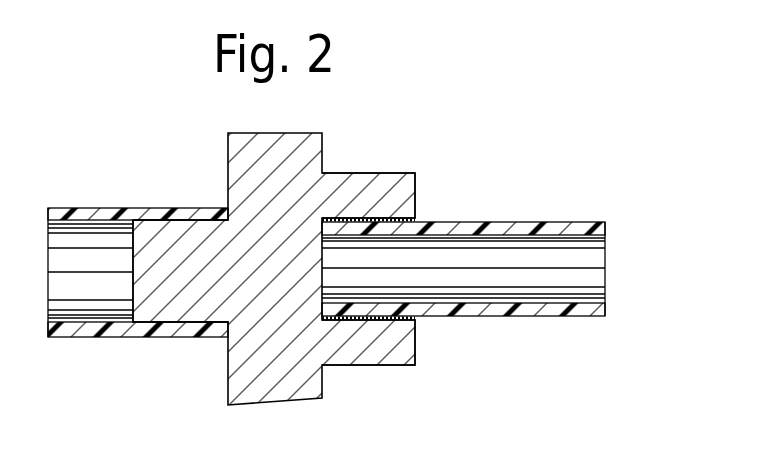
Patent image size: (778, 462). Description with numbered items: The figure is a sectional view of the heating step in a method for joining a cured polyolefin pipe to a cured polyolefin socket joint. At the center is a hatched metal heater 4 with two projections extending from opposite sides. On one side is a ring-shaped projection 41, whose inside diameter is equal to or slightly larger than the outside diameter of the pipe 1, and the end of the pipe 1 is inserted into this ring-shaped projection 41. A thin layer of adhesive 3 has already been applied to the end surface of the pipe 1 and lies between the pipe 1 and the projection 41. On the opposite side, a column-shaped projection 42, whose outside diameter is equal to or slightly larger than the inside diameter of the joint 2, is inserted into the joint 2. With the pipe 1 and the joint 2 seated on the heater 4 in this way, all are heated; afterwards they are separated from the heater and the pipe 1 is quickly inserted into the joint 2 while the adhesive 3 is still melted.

The pipe 1 is at (453, 222).
The joint 2 is at (100, 213).
The adhesive 3 is at (370, 218).
The metal heater 4 is at (232, 168).
The ring-shaped projection 41 is at (412, 340).
The column-shaped projection 42 is at (157, 303).